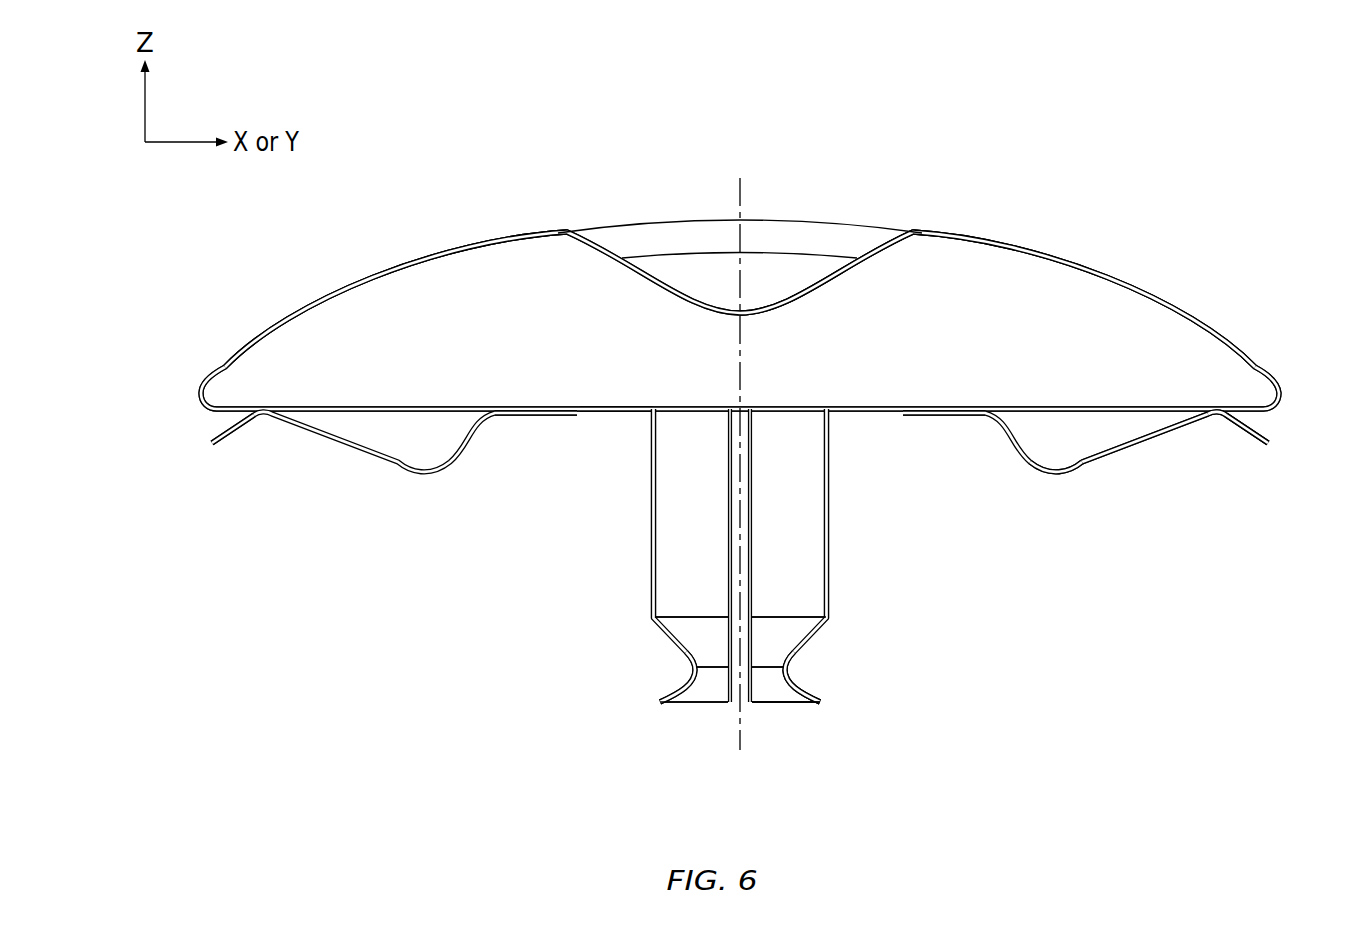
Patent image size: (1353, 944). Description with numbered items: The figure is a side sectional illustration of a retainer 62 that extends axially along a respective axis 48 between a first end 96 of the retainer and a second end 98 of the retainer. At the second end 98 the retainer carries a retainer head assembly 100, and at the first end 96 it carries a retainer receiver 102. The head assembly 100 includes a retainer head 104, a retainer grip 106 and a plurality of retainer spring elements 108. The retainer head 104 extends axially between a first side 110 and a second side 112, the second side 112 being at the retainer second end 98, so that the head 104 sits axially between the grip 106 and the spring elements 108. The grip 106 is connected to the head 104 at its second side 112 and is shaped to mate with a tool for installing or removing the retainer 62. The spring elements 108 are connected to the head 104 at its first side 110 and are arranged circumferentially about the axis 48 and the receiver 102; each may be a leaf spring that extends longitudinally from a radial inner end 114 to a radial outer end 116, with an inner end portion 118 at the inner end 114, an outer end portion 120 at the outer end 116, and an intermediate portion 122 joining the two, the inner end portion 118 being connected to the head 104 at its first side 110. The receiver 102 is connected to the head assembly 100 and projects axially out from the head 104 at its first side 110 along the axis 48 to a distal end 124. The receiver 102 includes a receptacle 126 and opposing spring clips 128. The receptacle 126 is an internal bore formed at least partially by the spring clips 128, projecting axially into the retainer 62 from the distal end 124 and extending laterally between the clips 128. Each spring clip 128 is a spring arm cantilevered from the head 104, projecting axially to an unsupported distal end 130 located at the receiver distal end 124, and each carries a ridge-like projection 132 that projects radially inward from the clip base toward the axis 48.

The axis 48 is at (740, 182).
The retainer 62 is at (1100, 207).
The first end 96 is at (685, 705).
The second end 98 is at (725, 220).
The retainer head assembly 100 is at (1147, 257).
The retainer receiver 102 is at (603, 613).
The retainer head 104 is at (1020, 250).
The retainer grip 106 is at (865, 223).
The retainer spring elements 108 is at (414, 488).
The first side 110 is at (627, 412).
The second side 112 is at (568, 228).
The radial inner end 114 is at (572, 415).
The radial outer end 116 is at (213, 445).
The inner end portion 118 is at (967, 432).
The outer end portion 120 is at (1207, 440).
The intermediate portion 122 is at (1057, 462).
The distal end 124 is at (808, 705).
The receptacle 126 is at (782, 607).
The spring clips 128 is at (650, 573).
The distal end 130 is at (662, 703).
The projection 132 is at (705, 668).